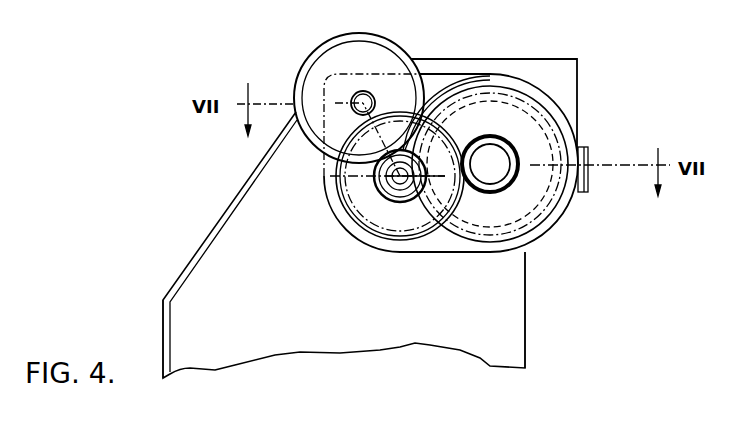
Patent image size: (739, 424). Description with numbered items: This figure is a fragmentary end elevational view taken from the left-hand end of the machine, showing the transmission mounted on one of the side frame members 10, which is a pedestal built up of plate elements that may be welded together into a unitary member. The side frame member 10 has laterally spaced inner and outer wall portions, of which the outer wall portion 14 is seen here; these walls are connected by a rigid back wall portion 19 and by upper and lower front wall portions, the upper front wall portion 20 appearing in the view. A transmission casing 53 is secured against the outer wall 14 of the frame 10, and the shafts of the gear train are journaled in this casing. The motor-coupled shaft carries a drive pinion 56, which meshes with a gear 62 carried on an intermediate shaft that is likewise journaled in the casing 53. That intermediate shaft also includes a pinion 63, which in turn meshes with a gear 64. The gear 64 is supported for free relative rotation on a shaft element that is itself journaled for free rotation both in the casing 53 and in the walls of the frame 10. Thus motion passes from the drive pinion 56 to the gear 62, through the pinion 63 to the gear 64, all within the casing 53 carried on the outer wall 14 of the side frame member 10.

The side frame member 10 is at (435, 328).
The outer wall portion 14 is at (270, 339).
The back wall portion 19 is at (163, 298).
The upper front wall portion 20 is at (525, 332).
The transmission casing 53 is at (456, 178).
The drive pinion 56 is at (372, 92).
The gear 62 is at (342, 202).
The pinion 63 is at (400, 176).
The gear 64 is at (555, 115).